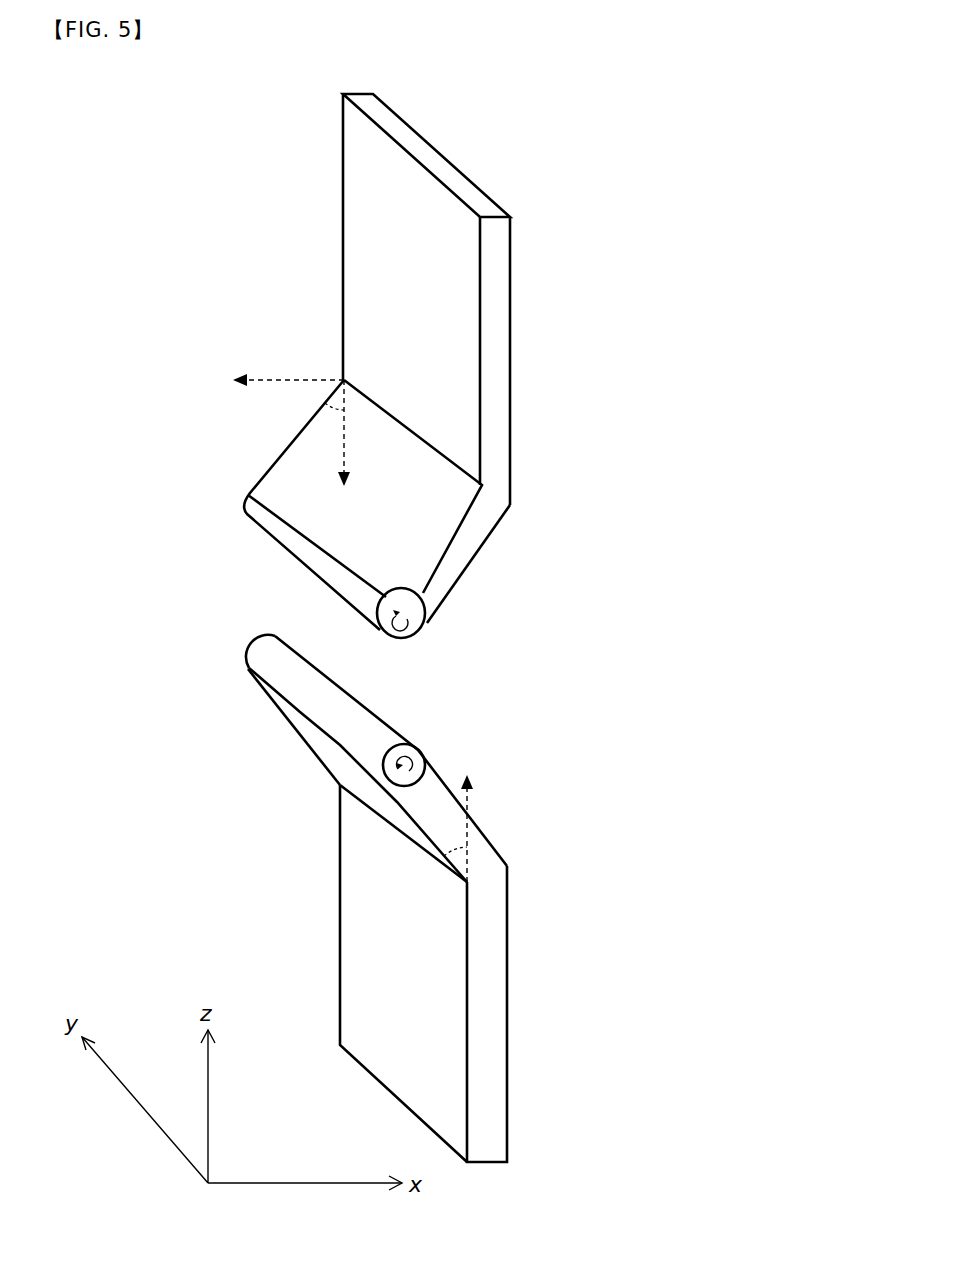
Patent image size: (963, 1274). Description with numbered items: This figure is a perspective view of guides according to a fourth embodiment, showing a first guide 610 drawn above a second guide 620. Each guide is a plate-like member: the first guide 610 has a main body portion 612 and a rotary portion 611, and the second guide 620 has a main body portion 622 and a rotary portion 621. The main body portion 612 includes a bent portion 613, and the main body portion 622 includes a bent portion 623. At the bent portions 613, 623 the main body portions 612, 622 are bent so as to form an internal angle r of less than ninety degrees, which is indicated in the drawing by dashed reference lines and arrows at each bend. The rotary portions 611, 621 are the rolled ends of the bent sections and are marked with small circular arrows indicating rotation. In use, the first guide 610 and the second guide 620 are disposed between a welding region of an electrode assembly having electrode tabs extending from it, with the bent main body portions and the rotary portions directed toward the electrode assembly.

The first guide 610 is at (437, 366).
The rotary portion 611 is at (248, 515).
The main body portion 612 is at (363, 290).
The bent portion 613 is at (498, 493).
The second guide 620 is at (445, 872).
The rotary portion 621 is at (267, 662).
The main body portion 622 is at (365, 972).
The bent portion 623 is at (490, 868).